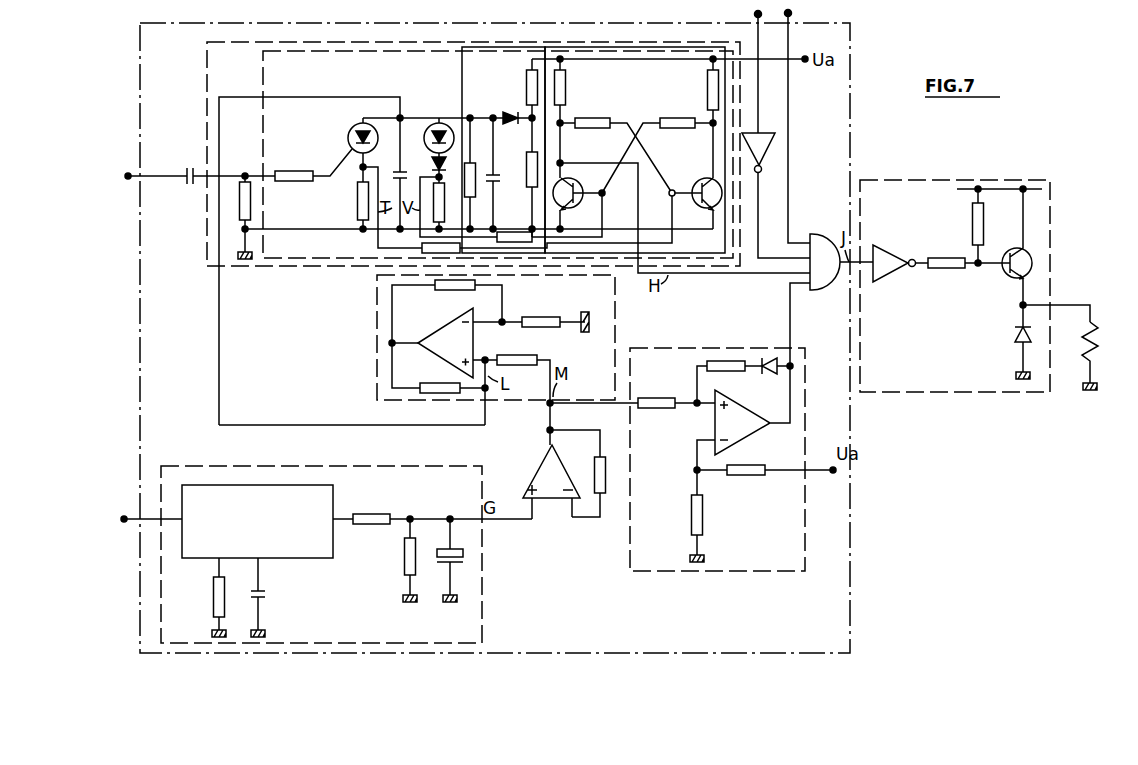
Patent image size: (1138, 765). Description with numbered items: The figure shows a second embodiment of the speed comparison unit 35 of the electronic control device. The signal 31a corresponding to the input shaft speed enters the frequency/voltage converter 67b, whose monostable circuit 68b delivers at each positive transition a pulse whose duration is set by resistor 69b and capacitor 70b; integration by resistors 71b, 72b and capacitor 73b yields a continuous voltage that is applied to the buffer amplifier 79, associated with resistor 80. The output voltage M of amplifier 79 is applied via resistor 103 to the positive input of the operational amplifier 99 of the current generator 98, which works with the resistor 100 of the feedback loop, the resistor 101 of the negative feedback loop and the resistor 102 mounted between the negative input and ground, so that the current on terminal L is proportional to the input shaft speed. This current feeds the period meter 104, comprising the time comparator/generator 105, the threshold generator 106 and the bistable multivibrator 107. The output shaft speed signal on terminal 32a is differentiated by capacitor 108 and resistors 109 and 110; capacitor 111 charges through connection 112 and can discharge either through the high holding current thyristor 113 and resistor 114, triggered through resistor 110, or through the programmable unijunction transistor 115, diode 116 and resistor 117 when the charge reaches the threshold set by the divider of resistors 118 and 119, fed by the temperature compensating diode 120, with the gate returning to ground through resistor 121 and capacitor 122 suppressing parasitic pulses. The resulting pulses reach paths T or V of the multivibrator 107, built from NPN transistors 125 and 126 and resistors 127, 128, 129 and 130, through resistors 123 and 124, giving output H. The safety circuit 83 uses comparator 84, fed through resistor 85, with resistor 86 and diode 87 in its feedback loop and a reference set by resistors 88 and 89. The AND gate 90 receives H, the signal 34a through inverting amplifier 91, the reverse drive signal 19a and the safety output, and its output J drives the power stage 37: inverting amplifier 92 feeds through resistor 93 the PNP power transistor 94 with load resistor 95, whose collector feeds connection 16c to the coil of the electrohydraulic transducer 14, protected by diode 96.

The comparison unit 35 is at (850, 140).
The period meter 104 is at (207, 67).
The time comparator/generator 105 is at (413, 51).
The threshold generator 106 is at (509, 47).
The bistable multivibrator 107 is at (651, 47).
The capacitor 108 is at (186, 169).
The resistor 109 is at (251, 200).
The resistor 110 is at (290, 171).
The capacitor 111 is at (398, 170).
The connection 112 is at (312, 97).
The high holding current thyristor 113 is at (350, 143).
The resistor 114 is at (362, 203).
The low holding current programmable unijunction transistor 115 is at (437, 124).
The diode 116 is at (450, 160).
The resistor 117 is at (433, 185).
The resistor 118 is at (527, 88).
The resistor 119 is at (528, 158).
The diode 120 is at (510, 112).
The resistor 121 is at (474, 165).
The capacitor 122 is at (496, 175).
The resistor 123 is at (440, 256).
The resistor 124 is at (516, 232).
The NPN transistor 125 is at (578, 208).
The NPN transistor 126 is at (701, 183).
The resistor 127 is at (566, 88).
The resistor 128 is at (596, 118).
The resistor 129 is at (680, 118).
The resistor 130 is at (707, 86).
The current generator 98 is at (377, 318).
The operational amplifier 99 is at (446, 337).
The resistor 100 is at (438, 383).
The resistor 101 is at (458, 290).
The resistor 102 is at (530, 317).
The resistor 103 is at (510, 355).
The amplifier 79 is at (540, 470).
The resistor 80 is at (597, 470).
The safety circuit 83 is at (749, 571).
The comparator 84 is at (752, 420).
The resistor 85 is at (655, 398).
The resistor 86 is at (728, 361).
The diode 87 is at (766, 358).
The resistor 88 is at (691, 515).
The resistor 89 is at (752, 475).
The logic gate 90 is at (825, 233).
The inverting amplifier 91 is at (770, 135).
The inverting amplifier 92 is at (886, 250).
The resistor 93 is at (935, 258).
The PNP power transistor 94 is at (1007, 273).
The load resistor 95 is at (973, 228).
The protection diode 96 is at (1015, 335).
The power stage 37 is at (963, 180).
The connection 16c is at (1052, 305).
The electrohydraulic transducer 14 is at (1088, 343).
The output signal from the timing unit 34a is at (760, 18).
The signal corresponding to the shift to reverse drive 19a is at (790, 17).
The terminal 32a is at (151, 166).
The signal 31a is at (150, 509).
The frequency/voltage converter 67b is at (256, 466).
The monostable circuit 68b is at (292, 497).
The resistor 69b is at (214, 597).
The capacitor 70b is at (265, 594).
The resistor 71b is at (367, 514).
The resistor 72b is at (405, 556).
The capacitor 73b is at (465, 556).